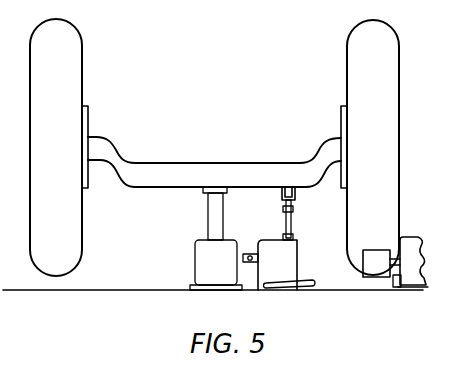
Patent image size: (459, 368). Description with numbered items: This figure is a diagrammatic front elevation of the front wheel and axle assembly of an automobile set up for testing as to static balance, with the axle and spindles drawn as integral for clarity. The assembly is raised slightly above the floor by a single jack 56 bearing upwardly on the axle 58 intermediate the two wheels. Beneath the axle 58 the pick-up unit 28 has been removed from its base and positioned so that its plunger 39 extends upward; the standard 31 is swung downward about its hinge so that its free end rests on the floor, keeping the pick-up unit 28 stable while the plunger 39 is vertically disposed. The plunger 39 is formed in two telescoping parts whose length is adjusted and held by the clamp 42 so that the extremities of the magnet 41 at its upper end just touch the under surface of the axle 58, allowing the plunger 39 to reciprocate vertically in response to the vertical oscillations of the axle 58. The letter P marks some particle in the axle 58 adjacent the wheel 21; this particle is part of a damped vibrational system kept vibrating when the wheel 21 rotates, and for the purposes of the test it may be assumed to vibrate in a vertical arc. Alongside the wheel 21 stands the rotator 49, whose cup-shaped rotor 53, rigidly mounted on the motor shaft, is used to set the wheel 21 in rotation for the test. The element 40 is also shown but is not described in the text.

The wheel 21 is at (400, 109).
The axle 58 is at (179, 152).
The particle P is at (327, 150).
The jack 56 is at (216, 238).
The standard 31 is at (249, 253).
The pick-up unit 28 is at (292, 259).
The magnet 41 is at (282, 192).
The plunger 39 is at (291, 230).
The clamp 42 is at (294, 210).
The lever 40 is at (311, 283).
The cup-shaped rotor 53 is at (381, 249).
The rotator 49 is at (416, 241).